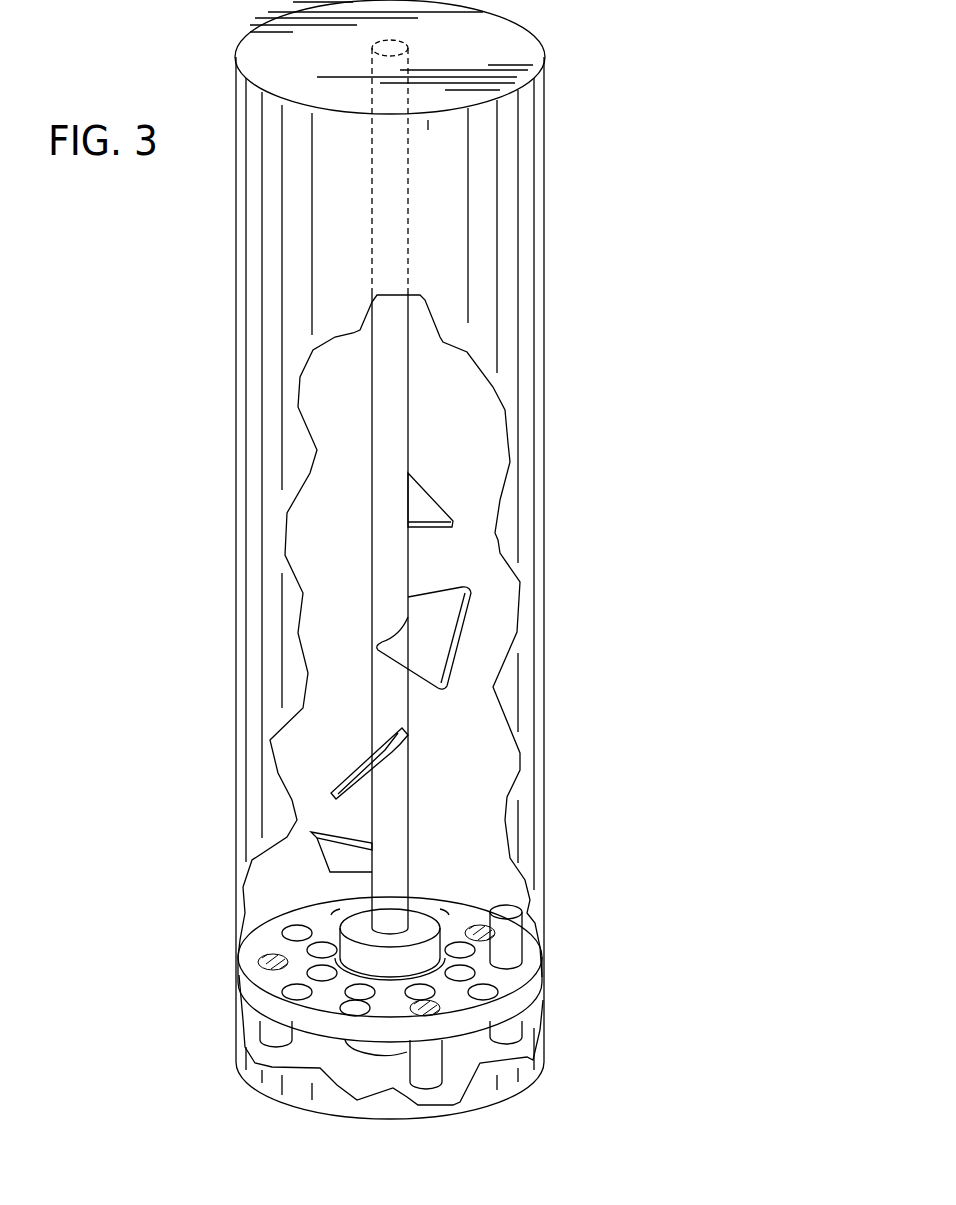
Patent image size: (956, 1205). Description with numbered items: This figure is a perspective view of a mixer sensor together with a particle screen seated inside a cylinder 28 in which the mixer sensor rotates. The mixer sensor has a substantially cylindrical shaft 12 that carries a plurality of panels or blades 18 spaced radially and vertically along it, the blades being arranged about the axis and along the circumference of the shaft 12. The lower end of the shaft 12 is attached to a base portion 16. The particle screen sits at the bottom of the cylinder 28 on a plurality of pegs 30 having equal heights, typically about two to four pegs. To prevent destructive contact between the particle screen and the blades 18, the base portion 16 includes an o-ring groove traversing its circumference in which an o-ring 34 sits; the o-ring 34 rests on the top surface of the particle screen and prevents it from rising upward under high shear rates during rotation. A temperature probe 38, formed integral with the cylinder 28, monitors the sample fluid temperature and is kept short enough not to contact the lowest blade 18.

The cylinder 28 is at (250, 432).
The shaft 12 is at (393, 396).
The blades 18 is at (438, 612).
The base portion 16 is at (353, 927).
The o-ring 34 is at (333, 963).
The pegs 30 is at (268, 1028).
The temperature probe 38 is at (510, 927).